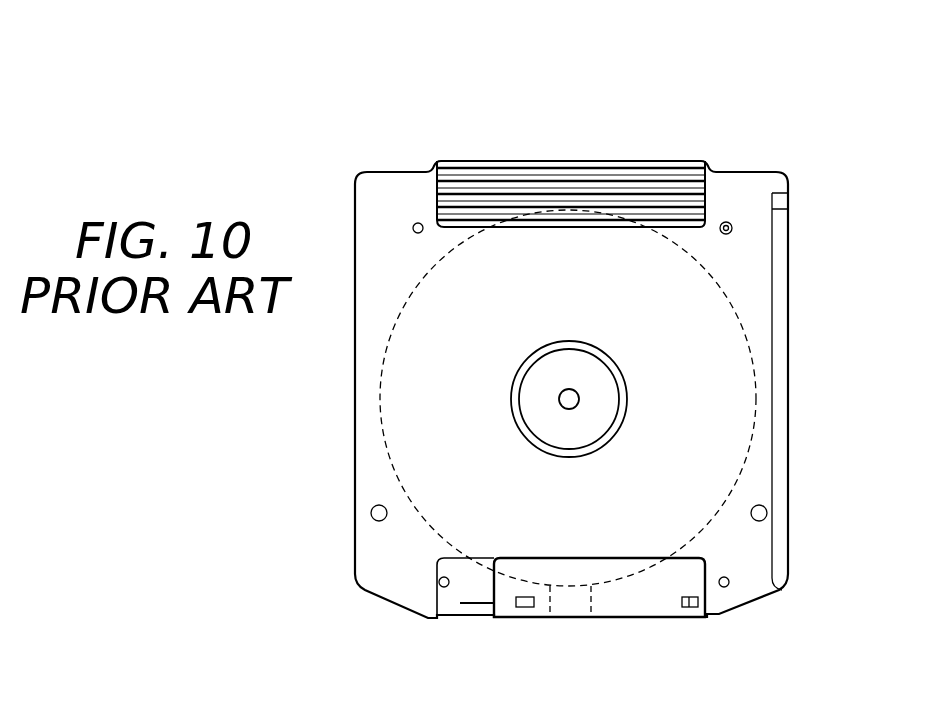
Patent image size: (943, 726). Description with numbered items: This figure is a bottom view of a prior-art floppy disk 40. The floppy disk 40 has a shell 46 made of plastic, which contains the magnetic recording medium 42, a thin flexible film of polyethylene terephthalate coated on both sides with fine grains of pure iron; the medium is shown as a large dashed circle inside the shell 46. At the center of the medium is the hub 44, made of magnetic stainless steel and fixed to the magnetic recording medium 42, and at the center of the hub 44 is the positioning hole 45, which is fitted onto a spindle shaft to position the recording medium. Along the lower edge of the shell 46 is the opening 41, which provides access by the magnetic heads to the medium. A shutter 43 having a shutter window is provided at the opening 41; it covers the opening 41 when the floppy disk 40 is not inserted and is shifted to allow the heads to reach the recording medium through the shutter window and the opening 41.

The floppy disk 40 is at (624, 148).
The opening 41 is at (563, 607).
The magnetic recording medium 42 is at (738, 370).
The shutter 43 is at (661, 605).
The hub 44 is at (592, 372).
The positioning hole 45 is at (567, 400).
The shell 46 is at (742, 183).